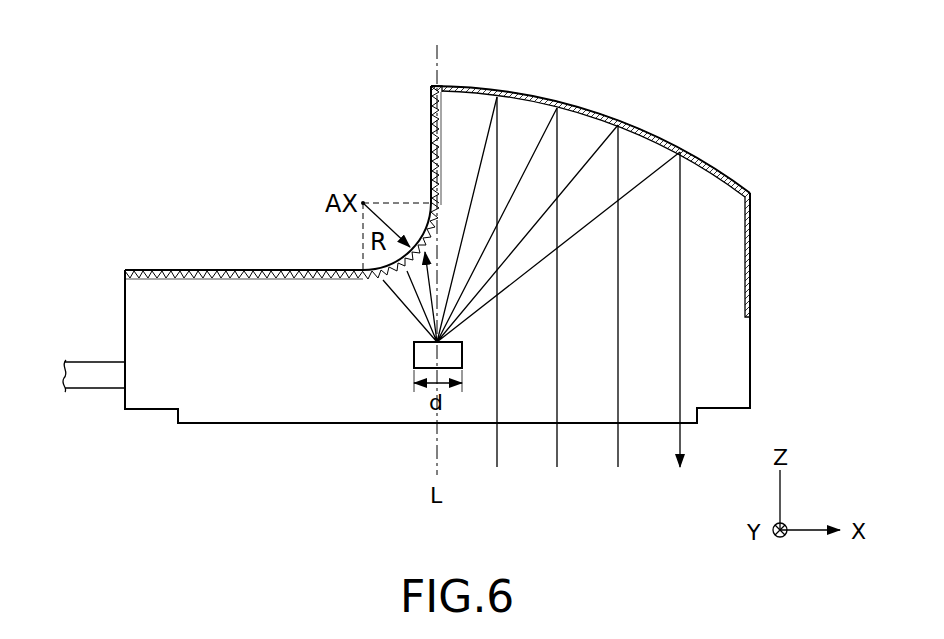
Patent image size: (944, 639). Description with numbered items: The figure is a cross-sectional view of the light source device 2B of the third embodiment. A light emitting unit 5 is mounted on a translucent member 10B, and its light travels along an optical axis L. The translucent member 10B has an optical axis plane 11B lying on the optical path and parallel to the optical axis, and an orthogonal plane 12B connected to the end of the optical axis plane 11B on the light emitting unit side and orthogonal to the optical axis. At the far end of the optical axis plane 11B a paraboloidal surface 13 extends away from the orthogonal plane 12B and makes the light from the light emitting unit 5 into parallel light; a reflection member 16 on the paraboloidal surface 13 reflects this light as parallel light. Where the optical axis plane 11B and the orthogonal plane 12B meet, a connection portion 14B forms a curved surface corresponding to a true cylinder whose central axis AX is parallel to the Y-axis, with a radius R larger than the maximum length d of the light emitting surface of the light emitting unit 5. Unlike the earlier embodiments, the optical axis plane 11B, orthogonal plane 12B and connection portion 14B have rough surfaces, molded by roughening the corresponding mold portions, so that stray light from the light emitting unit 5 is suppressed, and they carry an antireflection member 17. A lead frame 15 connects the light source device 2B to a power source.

The light source device 2B is at (668, 122).
The light emitting unit 5 is at (414, 354).
The translucent member 10B is at (233, 413).
The optical axis plane 11B is at (431, 147).
The orthogonal plane 12B is at (158, 275).
The paraboloidal surface 13 is at (716, 170).
The connection portion 14B is at (423, 238).
The lead frame 15 is at (92, 383).
The reflection member 16 is at (536, 93).
The antireflection member 17 is at (431, 112).